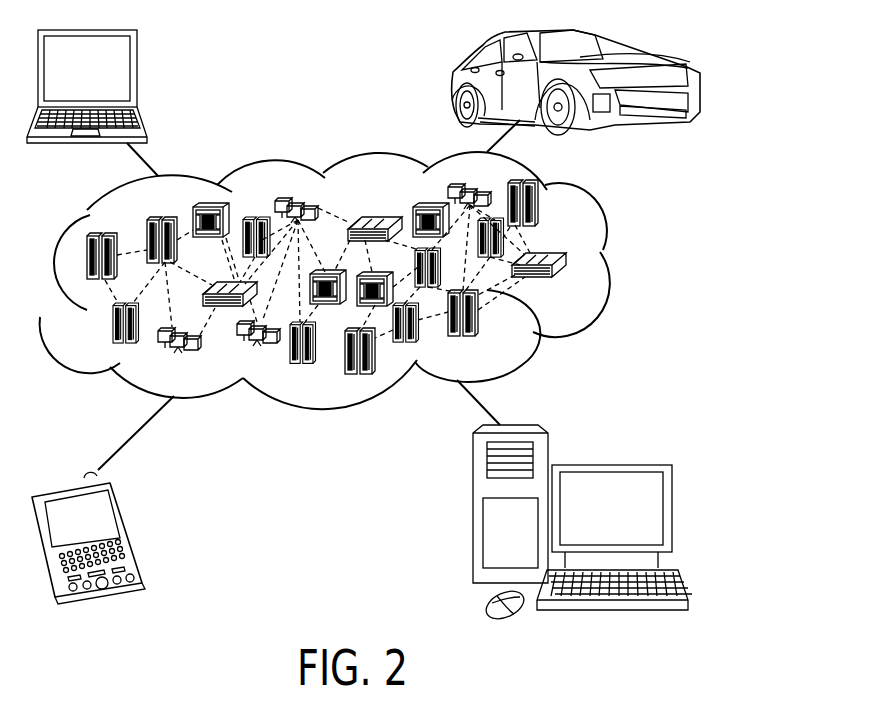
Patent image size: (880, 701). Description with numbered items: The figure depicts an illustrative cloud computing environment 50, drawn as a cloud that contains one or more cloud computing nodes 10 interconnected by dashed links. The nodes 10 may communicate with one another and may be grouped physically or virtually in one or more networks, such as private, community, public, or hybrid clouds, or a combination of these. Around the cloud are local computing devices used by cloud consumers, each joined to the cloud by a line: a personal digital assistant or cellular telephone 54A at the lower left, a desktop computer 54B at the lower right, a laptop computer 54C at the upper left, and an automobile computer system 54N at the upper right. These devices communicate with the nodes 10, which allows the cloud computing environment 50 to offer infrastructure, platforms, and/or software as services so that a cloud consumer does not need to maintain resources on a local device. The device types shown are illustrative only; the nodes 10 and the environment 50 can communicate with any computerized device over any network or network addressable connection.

The cloud computing nodes 10 is at (586, 295).
The cloud computing environment 50 is at (615, 258).
The personal digital assistant or cellular telephone 54A is at (132, 527).
The desktop computer 54B is at (610, 465).
The laptop computer 54C is at (137, 70).
The automobile computer system 54N is at (452, 80).